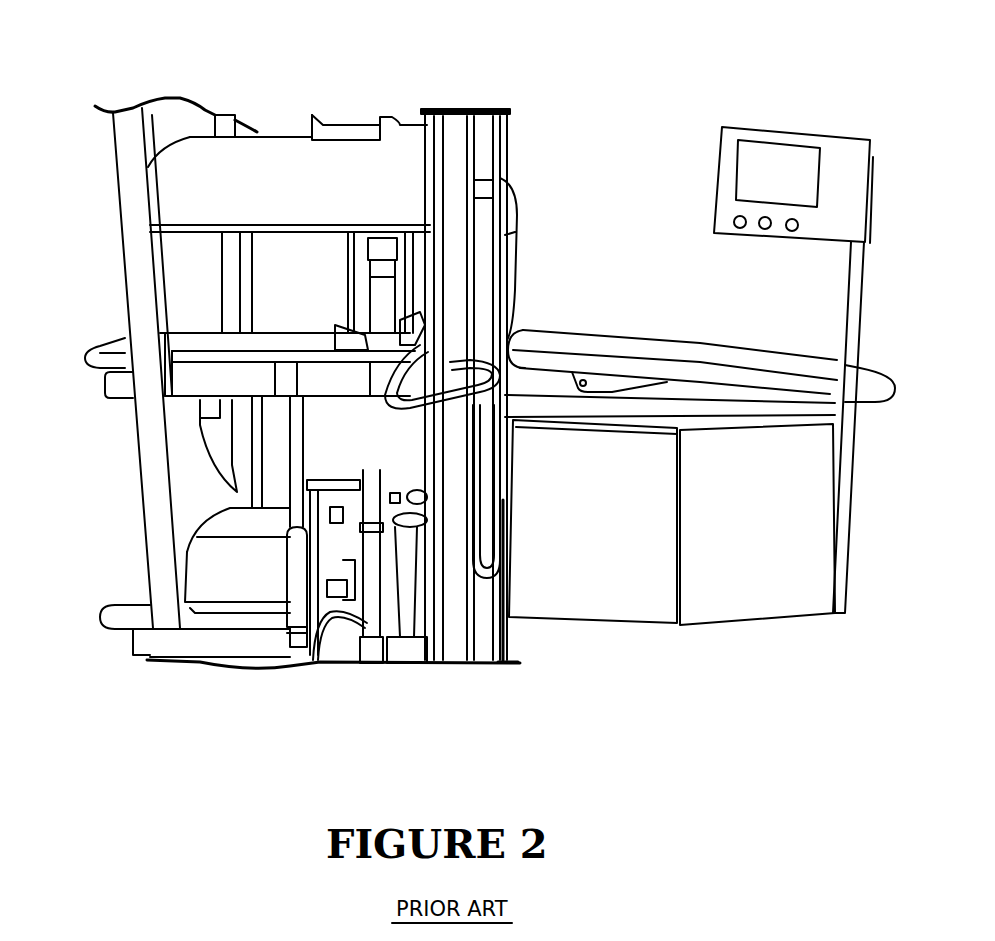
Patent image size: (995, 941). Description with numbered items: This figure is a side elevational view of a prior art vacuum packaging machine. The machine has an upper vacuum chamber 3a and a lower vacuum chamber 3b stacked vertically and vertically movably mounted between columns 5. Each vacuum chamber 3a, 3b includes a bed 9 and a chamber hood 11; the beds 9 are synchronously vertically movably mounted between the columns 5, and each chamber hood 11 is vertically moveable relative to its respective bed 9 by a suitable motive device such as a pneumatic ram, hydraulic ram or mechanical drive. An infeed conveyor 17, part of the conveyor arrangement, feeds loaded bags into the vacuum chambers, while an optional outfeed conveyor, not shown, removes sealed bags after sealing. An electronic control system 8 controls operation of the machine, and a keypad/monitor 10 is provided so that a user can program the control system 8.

The columns 5 is at (127, 160).
The upper vacuum chamber 3a is at (262, 187).
The chamber hood 11 is at (328, 197).
The bed 9 is at (192, 375).
The lower vacuum chamber 3b is at (208, 560).
The infeed conveyor 17 is at (575, 330).
The keypad/monitor 10 is at (763, 180).
The electronic control system 8 is at (740, 550).